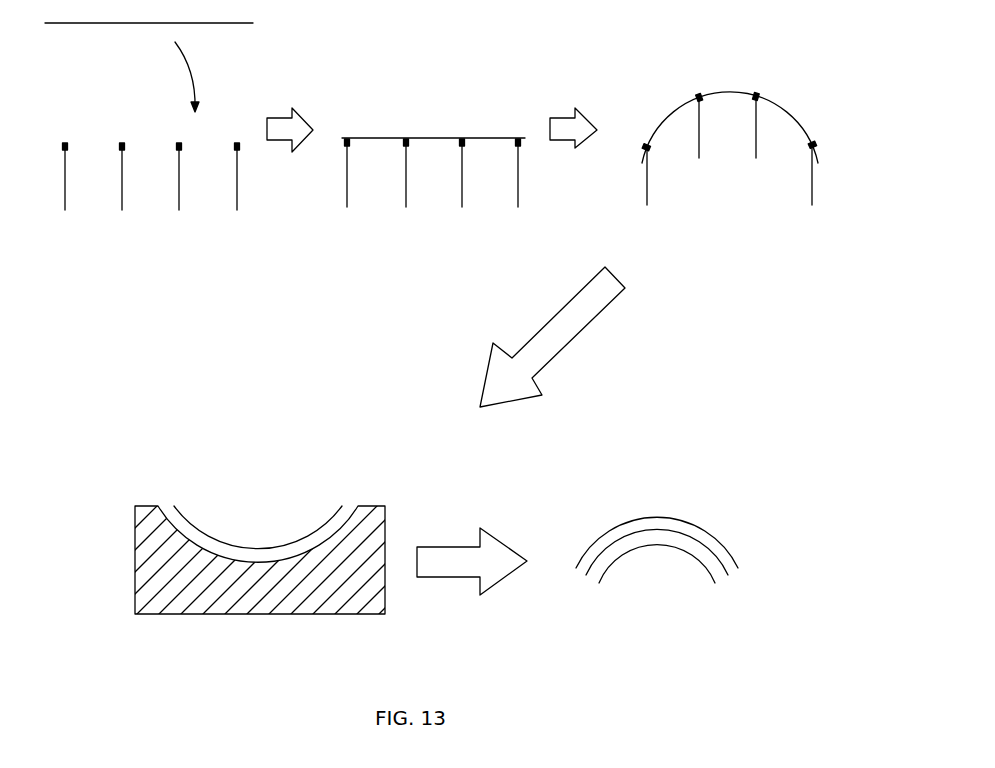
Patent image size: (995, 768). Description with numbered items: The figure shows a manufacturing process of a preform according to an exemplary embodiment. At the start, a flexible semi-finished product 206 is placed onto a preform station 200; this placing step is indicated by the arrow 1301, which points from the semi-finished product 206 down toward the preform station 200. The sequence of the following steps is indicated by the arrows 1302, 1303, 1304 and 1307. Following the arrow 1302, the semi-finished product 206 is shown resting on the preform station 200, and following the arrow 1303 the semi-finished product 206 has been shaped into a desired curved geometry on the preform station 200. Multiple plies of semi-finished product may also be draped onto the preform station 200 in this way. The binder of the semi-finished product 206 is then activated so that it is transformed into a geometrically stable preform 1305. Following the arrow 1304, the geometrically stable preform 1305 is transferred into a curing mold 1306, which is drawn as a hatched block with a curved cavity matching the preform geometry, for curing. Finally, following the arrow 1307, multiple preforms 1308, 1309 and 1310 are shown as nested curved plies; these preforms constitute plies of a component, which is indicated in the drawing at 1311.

The preform station 200 is at (152, 230).
The flexible semi-finished product 206 is at (218, 23).
The arrow 1301 is at (185, 62).
The arrow 1302 is at (277, 133).
The arrow 1303 is at (560, 137).
The arrow 1304 is at (593, 300).
The geometrically stable preform 1305 is at (227, 545).
The curing mold 1306 is at (233, 614).
The arrow 1307 is at (447, 553).
The preform 1308 is at (705, 567).
The preform 1309 is at (725, 568).
The preform 1310 is at (723, 540).
The curved laminated assembly 1311 is at (703, 540).